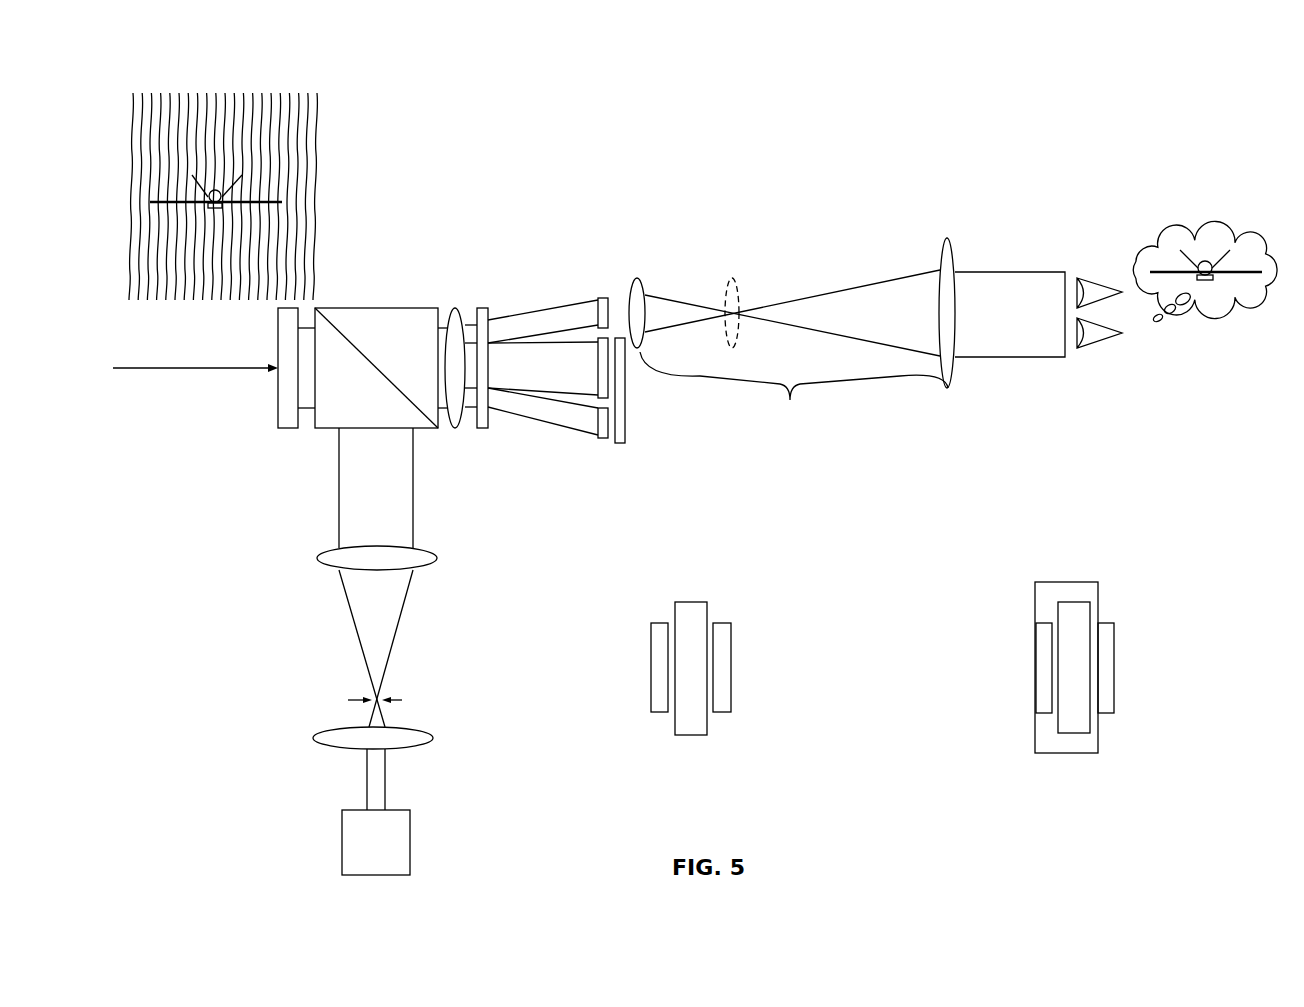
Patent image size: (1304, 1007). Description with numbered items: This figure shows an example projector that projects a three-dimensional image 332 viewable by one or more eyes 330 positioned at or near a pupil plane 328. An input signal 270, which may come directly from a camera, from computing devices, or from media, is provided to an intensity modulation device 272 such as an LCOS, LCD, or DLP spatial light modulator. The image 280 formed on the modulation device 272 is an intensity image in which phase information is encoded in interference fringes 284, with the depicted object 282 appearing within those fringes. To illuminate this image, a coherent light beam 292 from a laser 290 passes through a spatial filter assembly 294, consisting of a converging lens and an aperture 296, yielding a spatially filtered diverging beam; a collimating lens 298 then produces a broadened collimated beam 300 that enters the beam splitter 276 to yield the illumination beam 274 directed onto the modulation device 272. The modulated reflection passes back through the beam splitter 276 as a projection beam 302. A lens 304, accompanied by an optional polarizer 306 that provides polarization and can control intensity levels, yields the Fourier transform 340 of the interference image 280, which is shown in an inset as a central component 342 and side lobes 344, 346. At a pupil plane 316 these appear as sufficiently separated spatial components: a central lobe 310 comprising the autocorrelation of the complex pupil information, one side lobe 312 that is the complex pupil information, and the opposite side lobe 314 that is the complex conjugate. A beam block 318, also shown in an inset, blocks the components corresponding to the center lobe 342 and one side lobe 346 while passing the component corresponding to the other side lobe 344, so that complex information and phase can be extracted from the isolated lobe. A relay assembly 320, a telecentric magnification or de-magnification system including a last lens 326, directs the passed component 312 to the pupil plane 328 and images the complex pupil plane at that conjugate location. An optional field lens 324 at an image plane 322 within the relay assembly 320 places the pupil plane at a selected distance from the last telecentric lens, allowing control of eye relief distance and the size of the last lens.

The input signal 270 is at (197, 367).
The intensity modulation device 272 is at (278, 400).
The illumination beam 274 is at (302, 428).
The beam splitter 276 is at (375, 308).
The image 280 is at (231, 189).
The image object 282 is at (222, 193).
The interference fringes 284 is at (132, 252).
The laser 290 is at (342, 837).
The coherent light beam 292 is at (373, 763).
The spatial filter assembly 294 is at (433, 738).
The aperture 296 is at (362, 698).
The collimating lens 298 is at (317, 558).
The collimated beam 300 is at (402, 500).
The projection beam 302 is at (445, 312).
The lens 304 is at (468, 440).
The polarizer 306 is at (487, 298).
The central lobe 310 is at (607, 370).
The side lobe 312 is at (570, 312).
The opposite side lobe 314 is at (585, 430).
The pupil plane 316 is at (589, 397).
The beam block 318 is at (627, 425).
The relay assembly 320 is at (849, 337).
The image plane 322 is at (812, 295).
The field lens 324 is at (740, 337).
The lens 326 is at (1000, 285).
The pupil plane 328 is at (1077, 367).
The eyes 330 is at (1152, 342).
The 3-D image 332 is at (1237, 229).
The Fourier transform 340 is at (880, 677).
The central component 342 is at (695, 603).
The side lobe 344 is at (723, 670).
The side lobe 346 is at (655, 663).